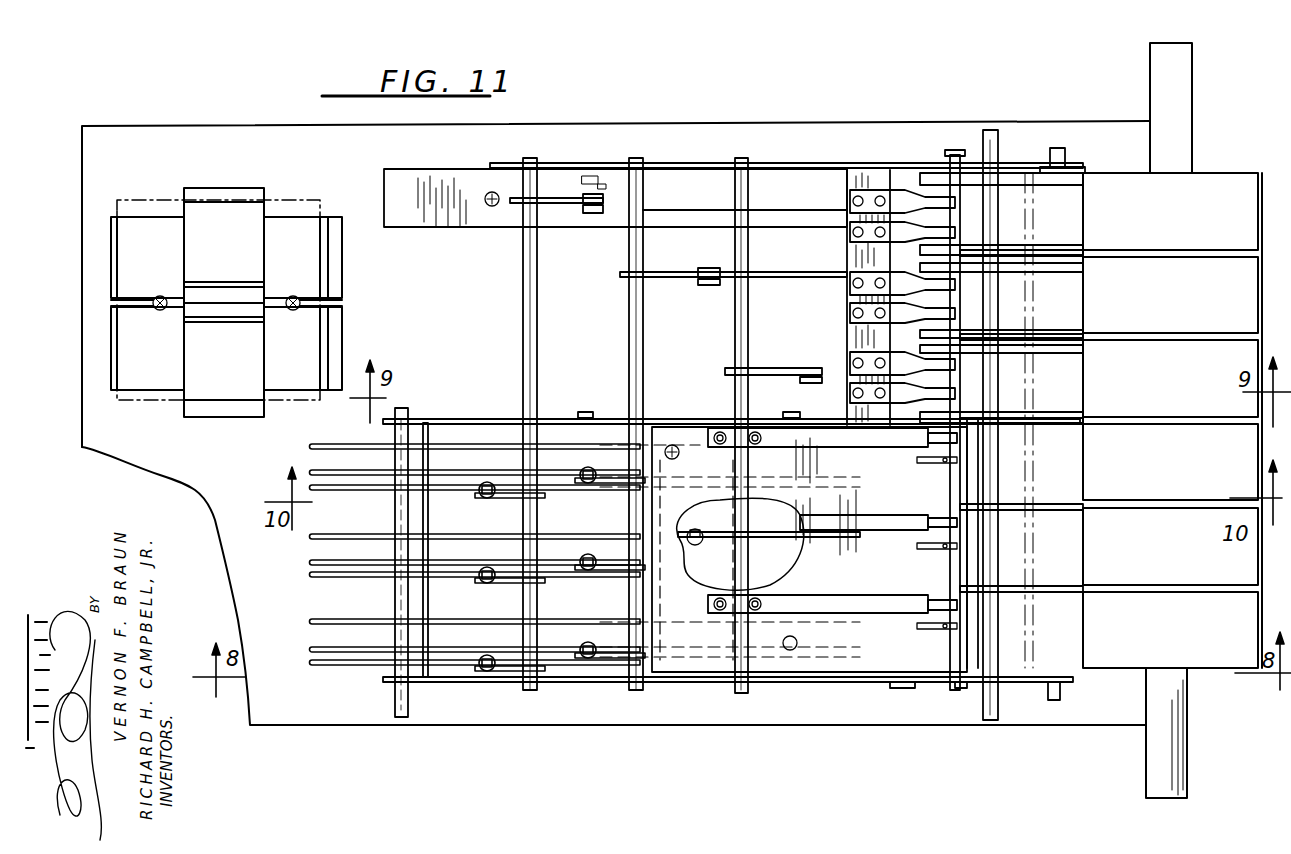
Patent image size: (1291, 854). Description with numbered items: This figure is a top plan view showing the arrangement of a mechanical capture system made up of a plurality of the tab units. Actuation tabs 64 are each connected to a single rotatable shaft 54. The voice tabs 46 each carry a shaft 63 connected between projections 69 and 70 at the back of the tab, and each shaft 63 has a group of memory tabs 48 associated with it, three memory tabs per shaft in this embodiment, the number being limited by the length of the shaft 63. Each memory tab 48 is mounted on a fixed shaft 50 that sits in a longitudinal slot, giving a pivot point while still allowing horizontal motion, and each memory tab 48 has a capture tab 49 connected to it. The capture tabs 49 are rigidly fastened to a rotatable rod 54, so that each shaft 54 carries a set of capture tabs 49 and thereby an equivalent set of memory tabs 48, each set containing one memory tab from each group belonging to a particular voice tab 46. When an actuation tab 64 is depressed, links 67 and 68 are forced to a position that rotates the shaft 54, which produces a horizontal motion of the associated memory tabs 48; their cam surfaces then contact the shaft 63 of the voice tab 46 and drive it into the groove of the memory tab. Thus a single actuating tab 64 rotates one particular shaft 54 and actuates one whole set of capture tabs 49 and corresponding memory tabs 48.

The voice tab 46 is at (1215, 562).
The memory tab 48 is at (312, 562).
The capture tab 49 is at (538, 663).
The fixed shaft 50 is at (403, 700).
The rotatable rod 54 is at (637, 332).
The shaft 63 is at (987, 650).
The actuation tab 64 is at (1223, 232).
The link 67 is at (828, 368).
The link 68 is at (620, 273).
The projection 69 is at (997, 607).
The projection 70 is at (993, 435).